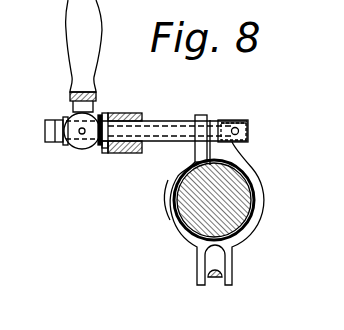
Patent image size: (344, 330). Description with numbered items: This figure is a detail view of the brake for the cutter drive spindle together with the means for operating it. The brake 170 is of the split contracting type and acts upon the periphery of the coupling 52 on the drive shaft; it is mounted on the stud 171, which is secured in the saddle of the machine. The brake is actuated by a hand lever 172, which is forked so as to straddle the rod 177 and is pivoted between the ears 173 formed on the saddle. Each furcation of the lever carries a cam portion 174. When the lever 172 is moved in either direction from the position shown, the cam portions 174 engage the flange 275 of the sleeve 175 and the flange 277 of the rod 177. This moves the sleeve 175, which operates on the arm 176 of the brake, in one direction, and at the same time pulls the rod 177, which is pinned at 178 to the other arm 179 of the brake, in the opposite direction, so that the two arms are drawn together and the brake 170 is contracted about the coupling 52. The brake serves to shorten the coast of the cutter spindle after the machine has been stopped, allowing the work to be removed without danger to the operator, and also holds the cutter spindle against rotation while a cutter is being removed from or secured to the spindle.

The coupling 52 is at (243, 182).
The brake 170 is at (264, 208).
The stud 171 is at (214, 282).
The hand lever 172 is at (67, 31).
The ears 173 is at (104, 112).
The cam portion 174 is at (83, 146).
The sleeve 175 is at (167, 119).
The arm 176 is at (209, 114).
The rod 177 is at (225, 116).
The pin 178 is at (240, 131).
The arm 179 is at (235, 119).
The flange 275 is at (107, 148).
The flange 277 is at (62, 146).